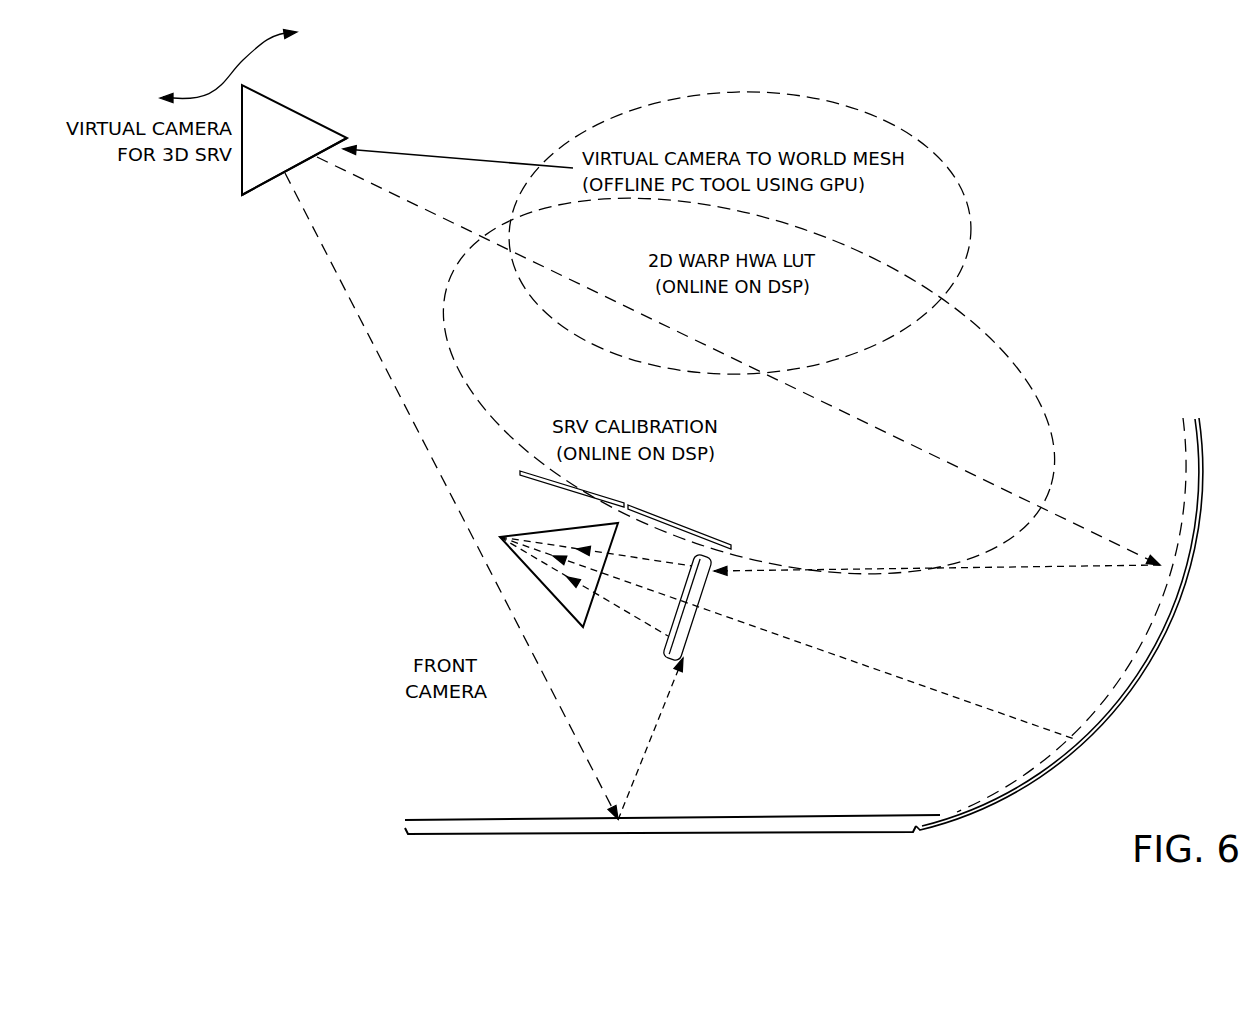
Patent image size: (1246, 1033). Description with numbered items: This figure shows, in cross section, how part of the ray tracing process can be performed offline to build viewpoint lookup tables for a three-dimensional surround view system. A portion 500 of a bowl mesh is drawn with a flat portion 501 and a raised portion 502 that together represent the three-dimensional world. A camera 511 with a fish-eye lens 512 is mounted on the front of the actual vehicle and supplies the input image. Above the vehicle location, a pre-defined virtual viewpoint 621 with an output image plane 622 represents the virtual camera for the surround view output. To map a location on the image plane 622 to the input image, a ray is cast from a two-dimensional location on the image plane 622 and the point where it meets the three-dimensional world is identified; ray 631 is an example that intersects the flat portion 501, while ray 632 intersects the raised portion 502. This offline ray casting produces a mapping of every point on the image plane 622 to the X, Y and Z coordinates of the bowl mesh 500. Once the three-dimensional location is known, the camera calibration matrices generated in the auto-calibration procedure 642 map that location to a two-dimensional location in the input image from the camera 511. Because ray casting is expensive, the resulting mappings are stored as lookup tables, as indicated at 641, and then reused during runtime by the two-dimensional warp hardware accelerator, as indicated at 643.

The bowl mesh portion 500 is at (523, 816).
The flat portion 501 is at (664, 835).
The raised portion 502 is at (1138, 683).
The camera 511 is at (538, 578).
The fish-eye lens 512 is at (698, 634).
The virtual viewpoint 621 is at (292, 112).
The image plane 622 is at (275, 179).
The ray 631 is at (408, 408).
The ray 632 is at (707, 347).
The stored lookup tables 641 is at (874, 111).
The auto-calibration procedure 642 is at (628, 503).
The runtime LUT reuse 643 is at (1005, 346).